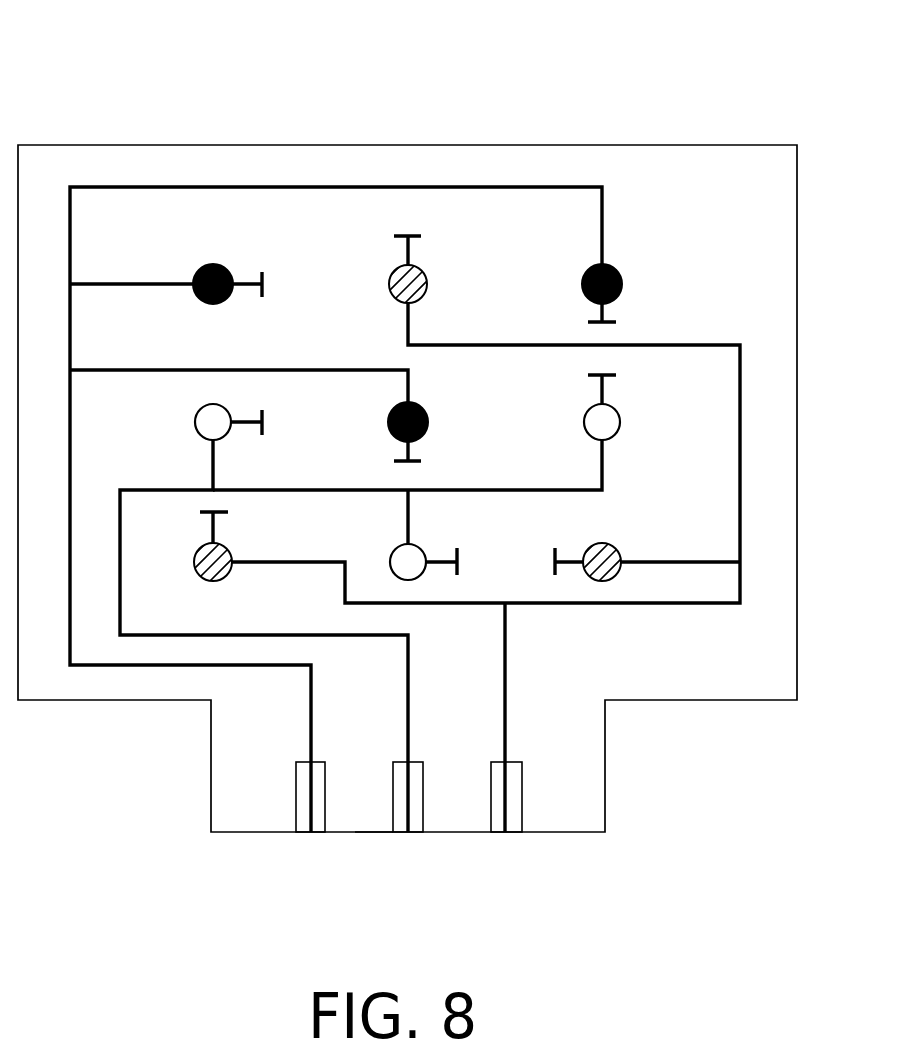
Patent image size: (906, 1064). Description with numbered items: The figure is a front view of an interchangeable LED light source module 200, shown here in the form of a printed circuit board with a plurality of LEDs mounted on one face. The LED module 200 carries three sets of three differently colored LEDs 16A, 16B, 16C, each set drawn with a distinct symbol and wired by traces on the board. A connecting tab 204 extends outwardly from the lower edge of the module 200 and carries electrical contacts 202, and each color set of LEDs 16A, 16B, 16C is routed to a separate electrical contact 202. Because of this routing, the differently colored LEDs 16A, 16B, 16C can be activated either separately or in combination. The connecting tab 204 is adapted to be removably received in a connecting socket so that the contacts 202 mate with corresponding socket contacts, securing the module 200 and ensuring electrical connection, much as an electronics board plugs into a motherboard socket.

The LED module 200 is at (632, 102).
The first colored LEDs 16A is at (213, 266).
The second colored LEDs 16B is at (428, 277).
The third colored LEDs 16C is at (204, 420).
The electrical contacts 202 is at (307, 830).
The connecting tab 204 is at (355, 810).